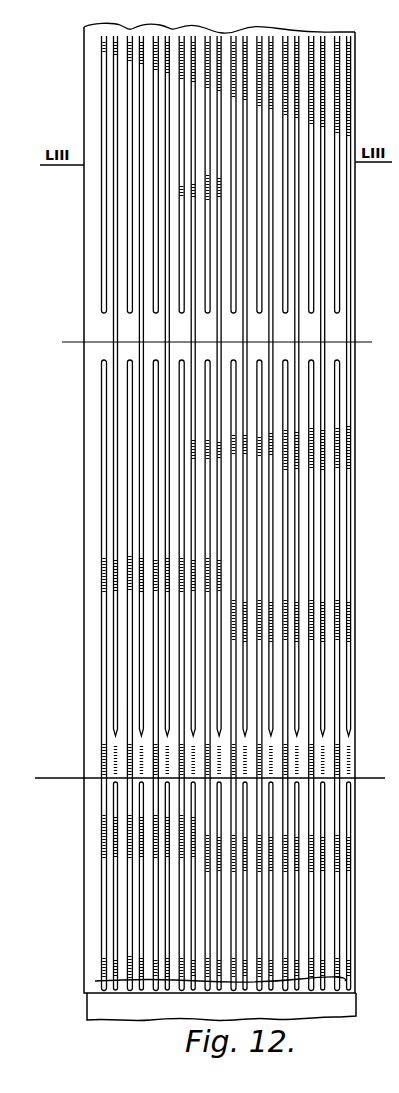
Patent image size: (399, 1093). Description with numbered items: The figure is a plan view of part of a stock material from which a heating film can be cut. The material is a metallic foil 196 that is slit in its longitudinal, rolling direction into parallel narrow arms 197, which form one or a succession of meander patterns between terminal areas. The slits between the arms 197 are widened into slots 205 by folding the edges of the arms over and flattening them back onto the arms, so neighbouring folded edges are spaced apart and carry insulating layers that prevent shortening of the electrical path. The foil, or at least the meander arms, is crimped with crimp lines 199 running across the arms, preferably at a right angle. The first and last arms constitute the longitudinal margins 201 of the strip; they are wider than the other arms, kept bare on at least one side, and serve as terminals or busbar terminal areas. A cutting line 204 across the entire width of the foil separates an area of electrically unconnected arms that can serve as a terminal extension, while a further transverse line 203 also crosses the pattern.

The longitudinal margins 201 is at (353, 297).
The parallel narrow arms 197 is at (281, 395).
The metallic foil 196 is at (378, 553).
The crimp lines 199 is at (323, 622).
The header section line 203 is at (377, 798).
The slots 205 is at (287, 837).
The cutting line 204 is at (60, 891).